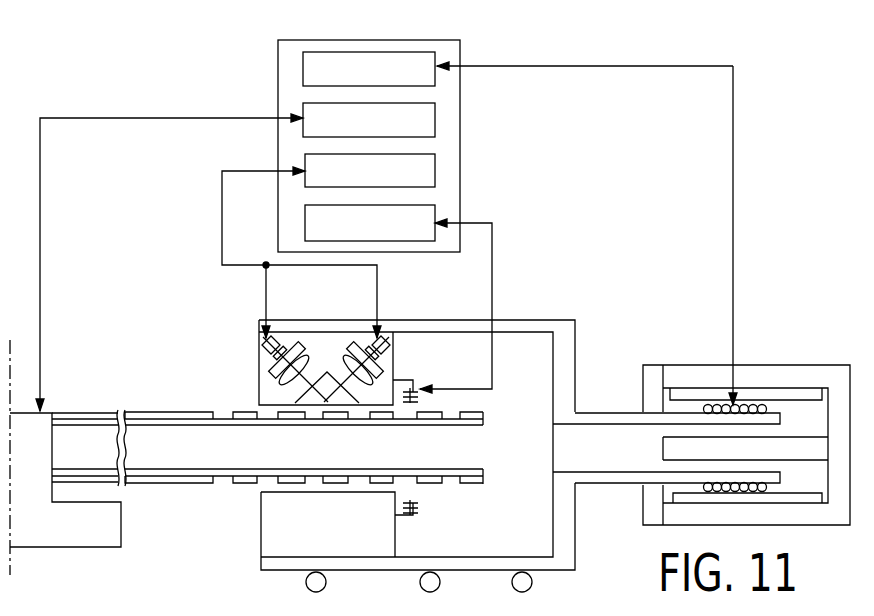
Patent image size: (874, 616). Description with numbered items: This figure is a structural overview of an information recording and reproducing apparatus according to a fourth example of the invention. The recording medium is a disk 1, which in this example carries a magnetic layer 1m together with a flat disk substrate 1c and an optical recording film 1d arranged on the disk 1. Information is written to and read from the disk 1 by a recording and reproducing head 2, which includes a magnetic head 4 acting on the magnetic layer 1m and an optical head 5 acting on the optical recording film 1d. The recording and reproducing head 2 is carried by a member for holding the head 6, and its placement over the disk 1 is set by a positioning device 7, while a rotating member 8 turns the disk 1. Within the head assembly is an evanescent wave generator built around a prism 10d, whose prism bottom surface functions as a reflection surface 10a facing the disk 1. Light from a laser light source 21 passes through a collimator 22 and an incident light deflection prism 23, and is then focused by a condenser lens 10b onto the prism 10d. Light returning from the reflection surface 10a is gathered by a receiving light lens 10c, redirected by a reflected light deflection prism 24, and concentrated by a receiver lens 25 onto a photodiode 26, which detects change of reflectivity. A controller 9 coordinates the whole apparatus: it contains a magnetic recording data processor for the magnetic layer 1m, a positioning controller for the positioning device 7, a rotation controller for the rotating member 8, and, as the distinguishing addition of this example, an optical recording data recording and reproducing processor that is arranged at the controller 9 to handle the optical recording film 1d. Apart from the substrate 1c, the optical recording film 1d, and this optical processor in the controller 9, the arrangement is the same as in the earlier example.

The recording medium 1 is at (165, 462).
The magnetic layer 1m is at (483, 420).
The flat disk substrate 1c is at (478, 452).
The optical recording film 1d is at (478, 484).
The recording and reproducing head 2 is at (262, 545).
The magnetic head 4 is at (415, 387).
The optical head 5 is at (357, 548).
The member for holding the head 6 is at (298, 328).
The positioning device 7 is at (772, 372).
The rotating member 8 is at (90, 540).
The controller 9 is at (363, 43).
The prism bottom surface functioning as a reflection surface 10a is at (320, 413).
The condenser lens 10b is at (282, 383).
The receiving light lens 10c is at (345, 358).
The prism 10d is at (327, 370).
The laser light source 21 is at (262, 342).
The collimator 22 is at (272, 358).
The incident light deflection prism 23 is at (272, 374).
The reflected light deflection prism 24 is at (388, 418).
The receiver lens 25 is at (385, 368).
The photodiode 26 is at (390, 337).